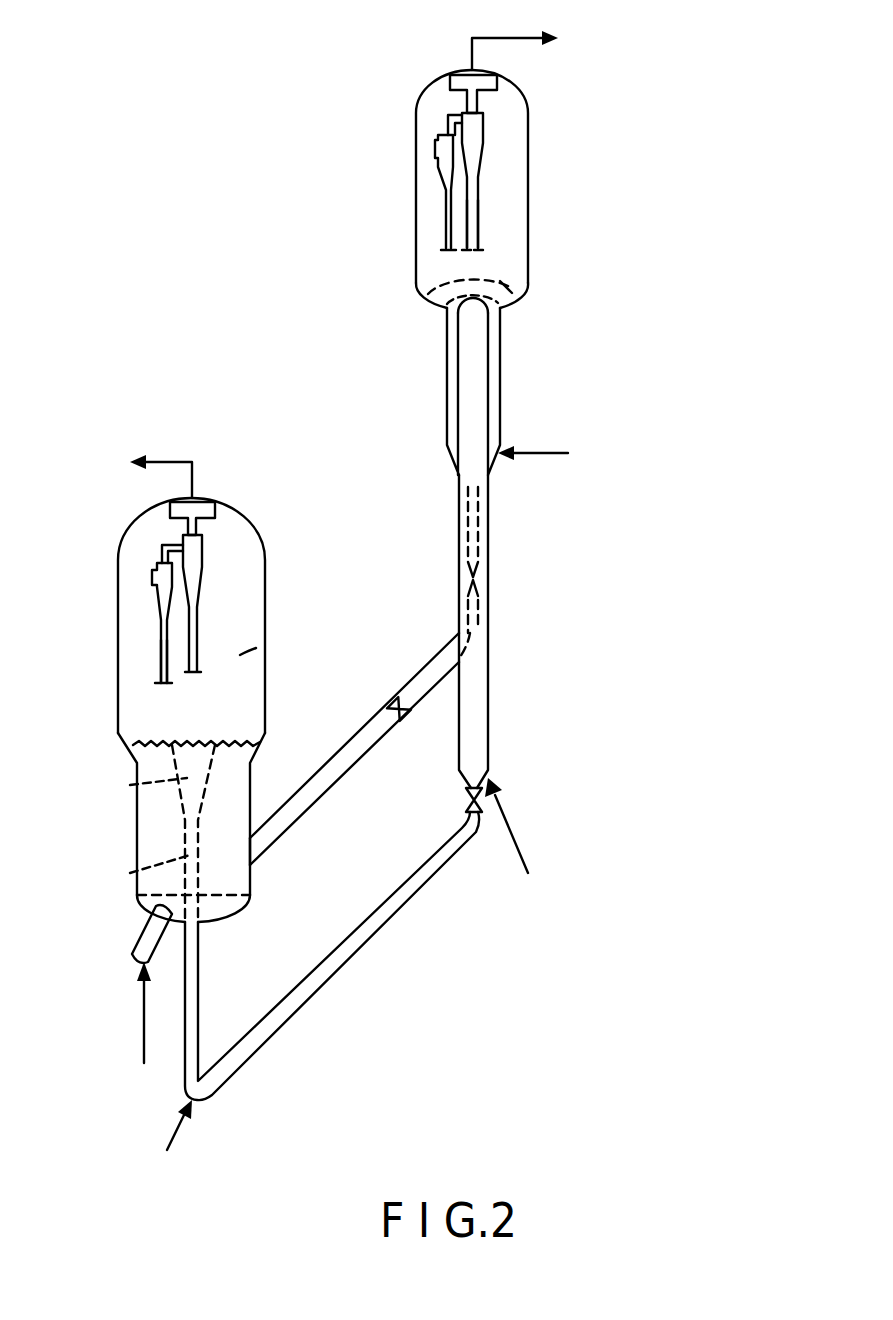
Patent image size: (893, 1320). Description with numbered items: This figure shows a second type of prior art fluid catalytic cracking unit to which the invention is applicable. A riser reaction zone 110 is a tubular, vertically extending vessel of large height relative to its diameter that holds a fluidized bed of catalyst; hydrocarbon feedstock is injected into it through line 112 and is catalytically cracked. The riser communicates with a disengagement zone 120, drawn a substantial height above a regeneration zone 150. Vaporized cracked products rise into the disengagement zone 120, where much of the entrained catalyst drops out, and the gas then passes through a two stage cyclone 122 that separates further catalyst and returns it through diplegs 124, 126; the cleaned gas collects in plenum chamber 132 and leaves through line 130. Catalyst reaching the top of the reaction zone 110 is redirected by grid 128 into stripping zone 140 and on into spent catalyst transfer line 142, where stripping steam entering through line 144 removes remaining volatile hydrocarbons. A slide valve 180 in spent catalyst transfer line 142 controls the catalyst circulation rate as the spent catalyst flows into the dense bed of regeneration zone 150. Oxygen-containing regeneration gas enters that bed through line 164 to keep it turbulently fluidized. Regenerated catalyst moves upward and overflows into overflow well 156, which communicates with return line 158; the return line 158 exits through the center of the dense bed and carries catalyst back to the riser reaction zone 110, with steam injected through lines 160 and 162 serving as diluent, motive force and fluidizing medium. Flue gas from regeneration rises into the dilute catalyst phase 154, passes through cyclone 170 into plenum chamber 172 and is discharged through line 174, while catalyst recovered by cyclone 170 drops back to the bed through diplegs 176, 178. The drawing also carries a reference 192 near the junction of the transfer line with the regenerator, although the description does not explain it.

The riser reaction zone 110 is at (489, 716).
The line 112 is at (513, 851).
The disengagement zone 120 is at (402, 132).
The two stage cyclone 122 is at (483, 143).
The dipleg 124 is at (478, 212).
The dipleg 126 is at (443, 208).
The grid 128 is at (520, 268).
The line 130 is at (481, 38).
The plenum chamber 132 is at (485, 81).
The stripping zone 140 is at (500, 378).
The spent catalyst transfer line 142 is at (479, 548).
The line 144 is at (533, 452).
The regeneration zone 150 is at (106, 697).
The dilute catalyst phase 154 is at (256, 648).
The overflow well 156 is at (130, 785).
The return line 158 is at (130, 873).
The line 160 is at (176, 1130).
The line 162 is at (152, 818).
The line 164 is at (143, 1001).
The cyclone 170 is at (198, 555).
The plenum chamber 172 is at (199, 511).
The line 174 is at (161, 462).
The dipleg 176 is at (194, 618).
The dipleg 178 is at (163, 650).
The slide valve 180 is at (391, 702).
The transfer conduit inlet 192 is at (262, 820).